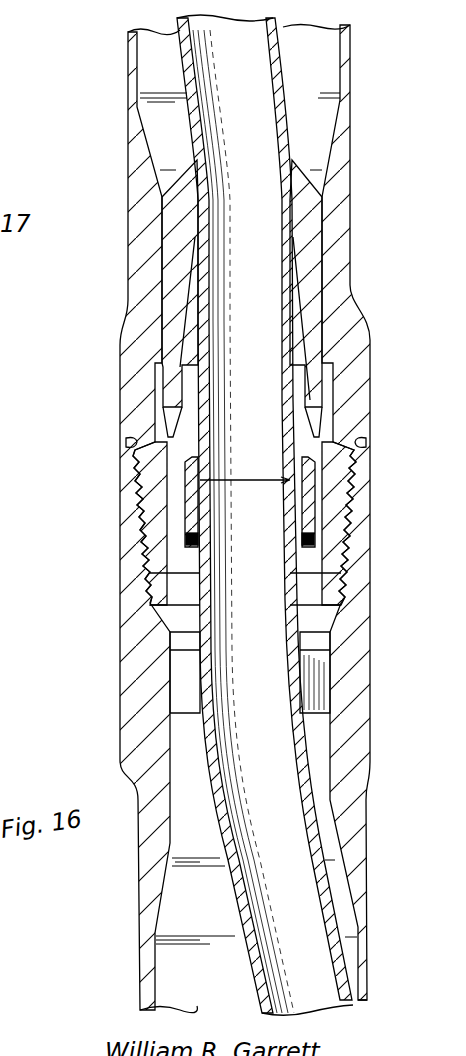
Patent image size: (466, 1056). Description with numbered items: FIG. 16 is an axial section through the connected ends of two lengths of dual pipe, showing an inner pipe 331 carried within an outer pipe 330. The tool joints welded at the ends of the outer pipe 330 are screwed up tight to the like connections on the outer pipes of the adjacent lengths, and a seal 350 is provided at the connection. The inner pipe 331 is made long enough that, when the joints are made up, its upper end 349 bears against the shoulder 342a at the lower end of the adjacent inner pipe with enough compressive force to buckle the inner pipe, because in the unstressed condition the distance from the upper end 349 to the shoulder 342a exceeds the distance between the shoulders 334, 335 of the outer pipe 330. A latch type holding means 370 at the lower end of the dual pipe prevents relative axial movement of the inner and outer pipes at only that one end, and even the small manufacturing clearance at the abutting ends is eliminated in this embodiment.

The outer pipe 330 is at (135, 52).
The inner pipe 331 is at (289, 343).
The shoulder 334 is at (128, 442).
The shoulder 335 is at (124, 462).
The shoulder 342a is at (200, 477).
The upper end 349 is at (290, 485).
The seal 350 is at (183, 677).
The latch type holding means 370 is at (312, 229).